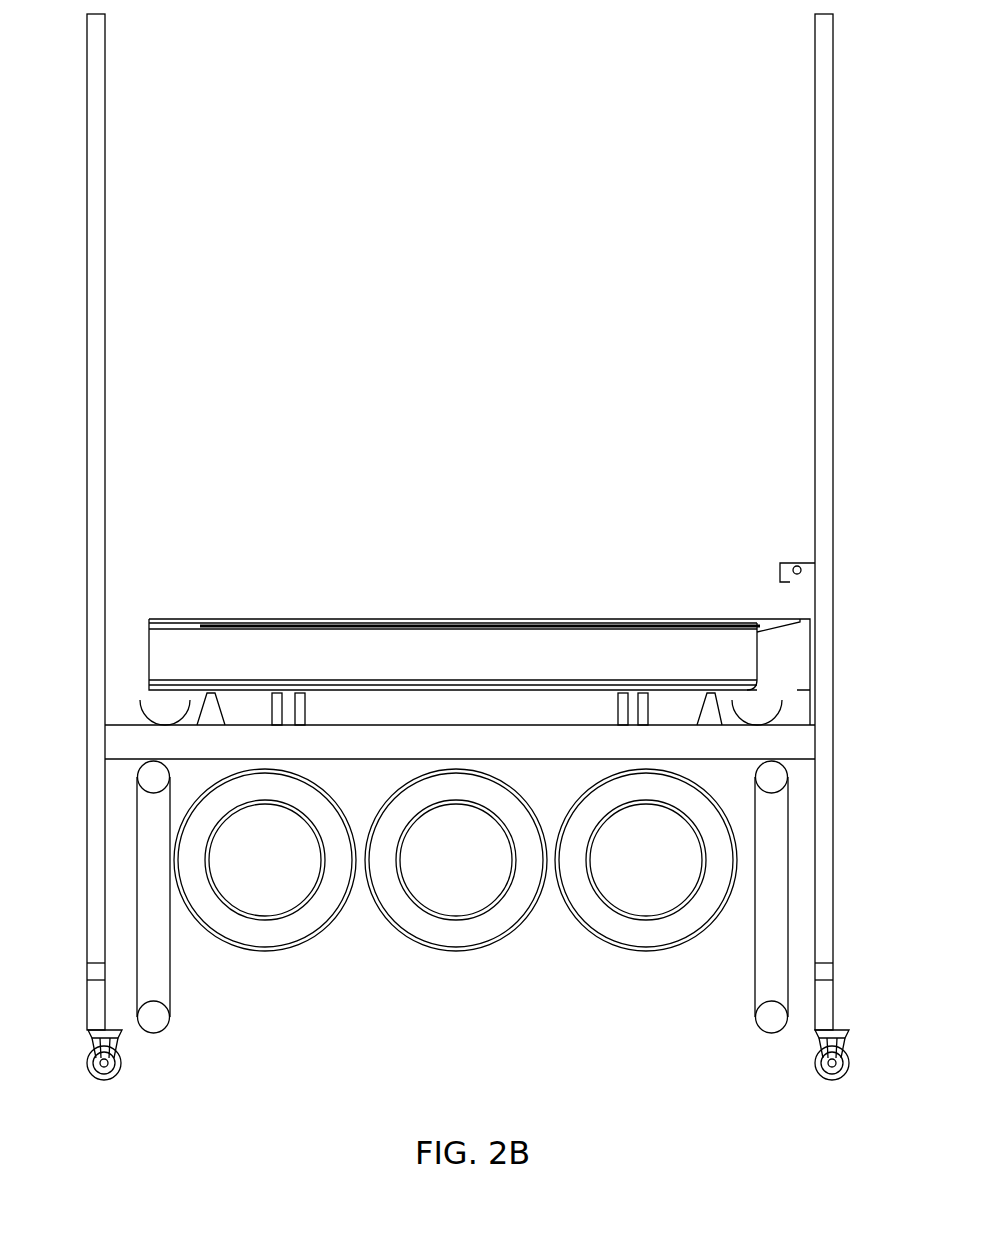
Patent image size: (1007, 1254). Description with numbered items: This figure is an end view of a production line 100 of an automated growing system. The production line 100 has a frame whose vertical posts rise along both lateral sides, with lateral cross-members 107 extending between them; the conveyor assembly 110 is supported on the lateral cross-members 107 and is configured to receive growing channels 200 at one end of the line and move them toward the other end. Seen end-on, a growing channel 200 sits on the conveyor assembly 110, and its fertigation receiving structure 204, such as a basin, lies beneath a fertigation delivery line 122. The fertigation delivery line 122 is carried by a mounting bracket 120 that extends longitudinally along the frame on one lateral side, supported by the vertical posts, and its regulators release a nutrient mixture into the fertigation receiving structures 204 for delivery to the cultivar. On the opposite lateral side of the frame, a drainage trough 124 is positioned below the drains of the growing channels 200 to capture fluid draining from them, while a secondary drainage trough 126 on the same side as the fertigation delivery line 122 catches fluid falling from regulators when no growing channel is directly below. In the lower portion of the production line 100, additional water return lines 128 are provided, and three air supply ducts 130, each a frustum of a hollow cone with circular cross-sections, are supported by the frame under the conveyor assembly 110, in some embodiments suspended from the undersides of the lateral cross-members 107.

The production line 100 is at (218, 1132).
The lateral cross-members 107 is at (688, 759).
The conveyor assembly 110 is at (207, 705).
The mounting bracket 120 is at (780, 572).
The fertigation delivery line 122 is at (794, 565).
The drainage trough 124 is at (140, 712).
The secondary drainage trough 126 is at (780, 703).
The water return lines 128 is at (142, 1010).
The air supply ducts 130 is at (275, 948).
The growing channel 200 is at (281, 588).
The fertigation receiving structures 204 is at (773, 628).